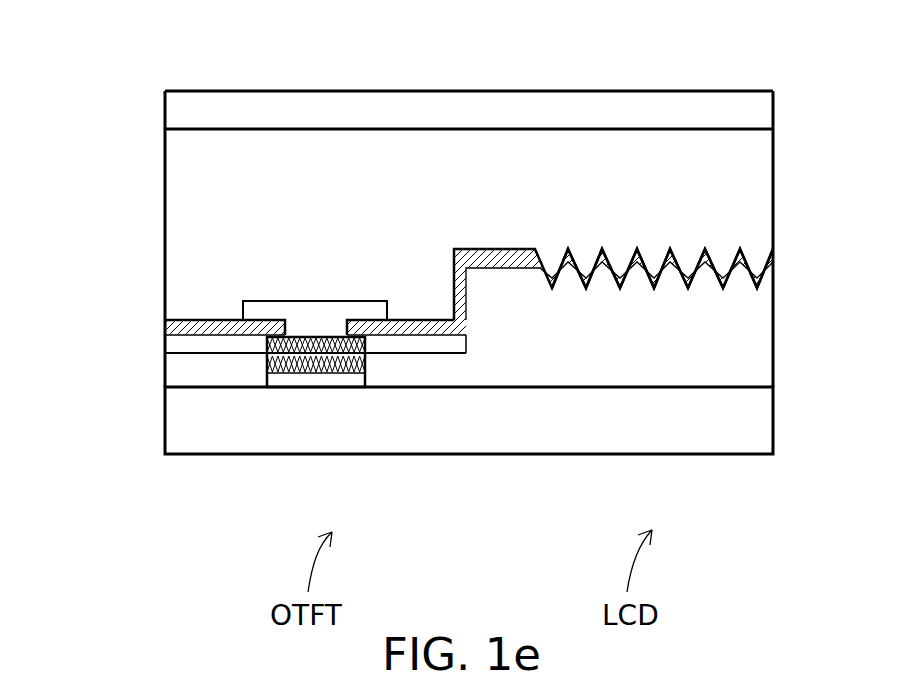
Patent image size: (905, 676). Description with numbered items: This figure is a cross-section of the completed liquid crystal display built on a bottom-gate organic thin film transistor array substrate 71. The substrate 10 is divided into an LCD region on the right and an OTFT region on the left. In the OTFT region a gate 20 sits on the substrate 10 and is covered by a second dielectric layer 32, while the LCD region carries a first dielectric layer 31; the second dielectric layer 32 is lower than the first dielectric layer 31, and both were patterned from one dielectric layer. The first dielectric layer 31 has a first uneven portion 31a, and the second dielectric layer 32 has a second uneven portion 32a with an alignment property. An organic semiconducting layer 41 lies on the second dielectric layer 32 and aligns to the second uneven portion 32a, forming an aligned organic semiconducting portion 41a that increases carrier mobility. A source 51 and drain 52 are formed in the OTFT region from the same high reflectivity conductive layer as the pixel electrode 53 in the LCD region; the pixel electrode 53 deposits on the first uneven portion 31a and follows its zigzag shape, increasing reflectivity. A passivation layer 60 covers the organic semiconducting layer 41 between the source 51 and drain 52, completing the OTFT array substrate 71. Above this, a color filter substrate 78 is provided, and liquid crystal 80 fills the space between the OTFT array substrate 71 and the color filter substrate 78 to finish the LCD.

The substrate 10 is at (762, 425).
The gate 20 is at (273, 380).
The first dielectric layer 31 is at (762, 340).
The first uneven portion 31a is at (648, 258).
The second dielectric layer 32 is at (175, 372).
The second uneven portion 32a is at (308, 372).
The organic semiconducting layer 41 is at (175, 345).
The aligned organic semiconducting portion 41a is at (353, 372).
The source 51 is at (175, 327).
The drain 52 is at (425, 328).
The pixel electrode 53 is at (598, 253).
The passivation layer 60 is at (260, 311).
The organic thin film transistor array substrate 71 is at (67, 257).
The color filter substrate 78 is at (762, 110).
The liquid crystal 80 is at (762, 150).